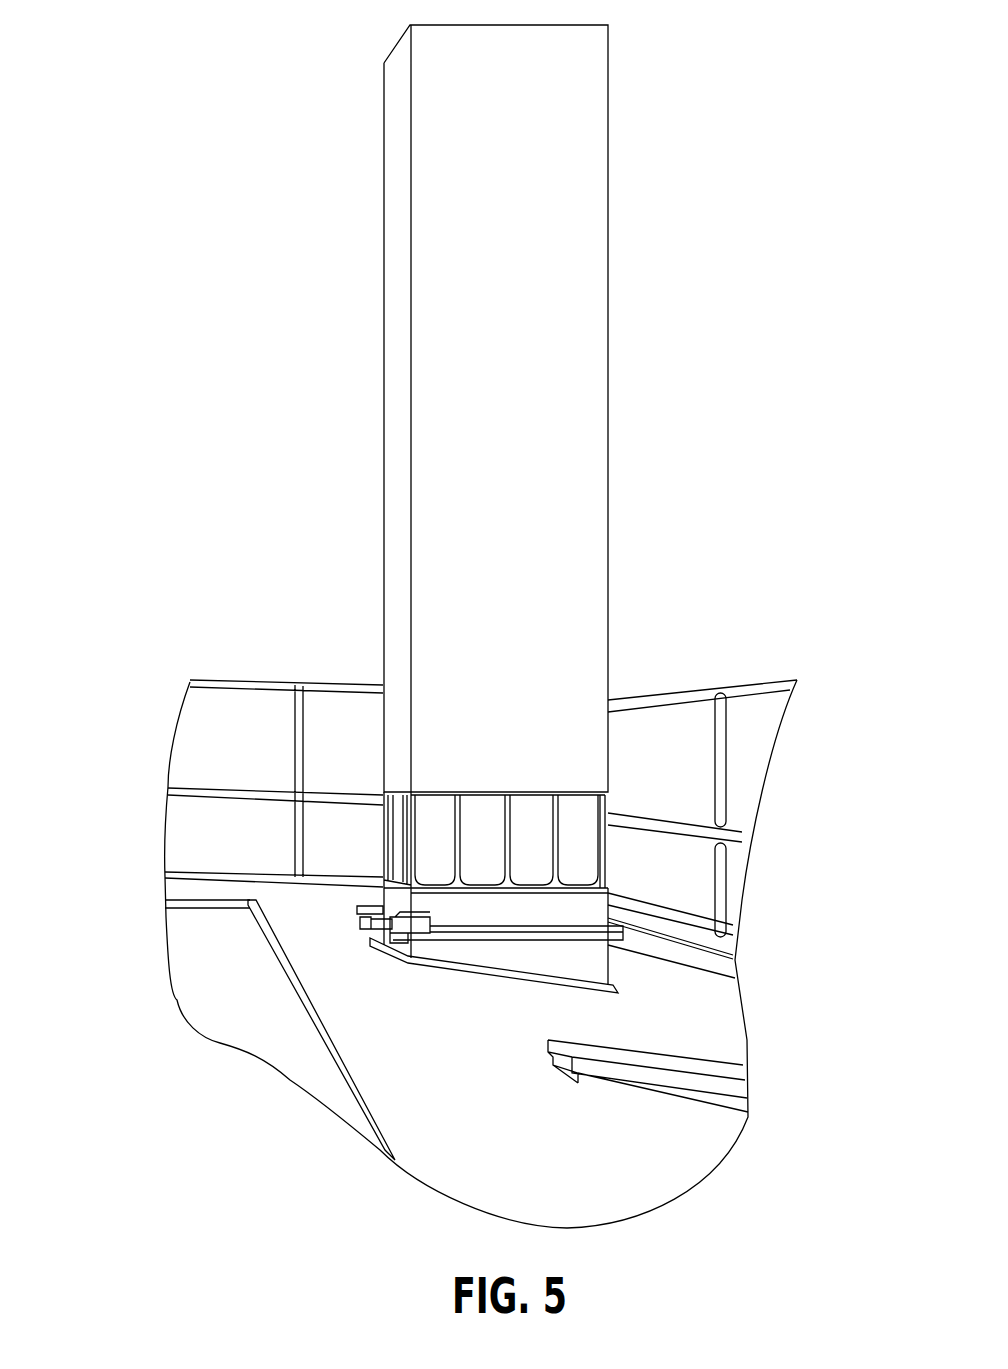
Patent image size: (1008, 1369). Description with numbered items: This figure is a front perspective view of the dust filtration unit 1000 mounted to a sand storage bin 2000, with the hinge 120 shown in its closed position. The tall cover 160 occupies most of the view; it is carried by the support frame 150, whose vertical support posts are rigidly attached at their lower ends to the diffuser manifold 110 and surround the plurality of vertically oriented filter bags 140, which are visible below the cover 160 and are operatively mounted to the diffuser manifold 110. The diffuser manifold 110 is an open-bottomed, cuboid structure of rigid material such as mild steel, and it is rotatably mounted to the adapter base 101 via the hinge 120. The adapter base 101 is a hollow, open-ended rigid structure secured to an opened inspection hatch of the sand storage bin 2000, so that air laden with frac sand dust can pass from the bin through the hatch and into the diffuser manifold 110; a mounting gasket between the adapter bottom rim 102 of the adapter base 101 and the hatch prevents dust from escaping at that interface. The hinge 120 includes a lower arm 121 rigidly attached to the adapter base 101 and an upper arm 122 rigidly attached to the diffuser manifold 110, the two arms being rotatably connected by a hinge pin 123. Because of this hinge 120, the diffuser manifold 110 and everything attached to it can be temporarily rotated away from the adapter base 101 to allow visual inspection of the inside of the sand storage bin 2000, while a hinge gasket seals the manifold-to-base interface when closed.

The dust filtration unit 1000 is at (644, 322).
The sand storage bin 2000 is at (216, 903).
The cover 160 is at (398, 383).
The support frame 150 is at (380, 830).
The filter bags 140 is at (537, 867).
The diffuser manifold 110 is at (605, 898).
The adapter base 101 is at (605, 960).
The adapter bottom rim 102 is at (505, 978).
The hinge 120 is at (365, 956).
The lower arm 121 is at (360, 923).
The upper arm 122 is at (355, 916).
The hinge pin 123 is at (357, 908).